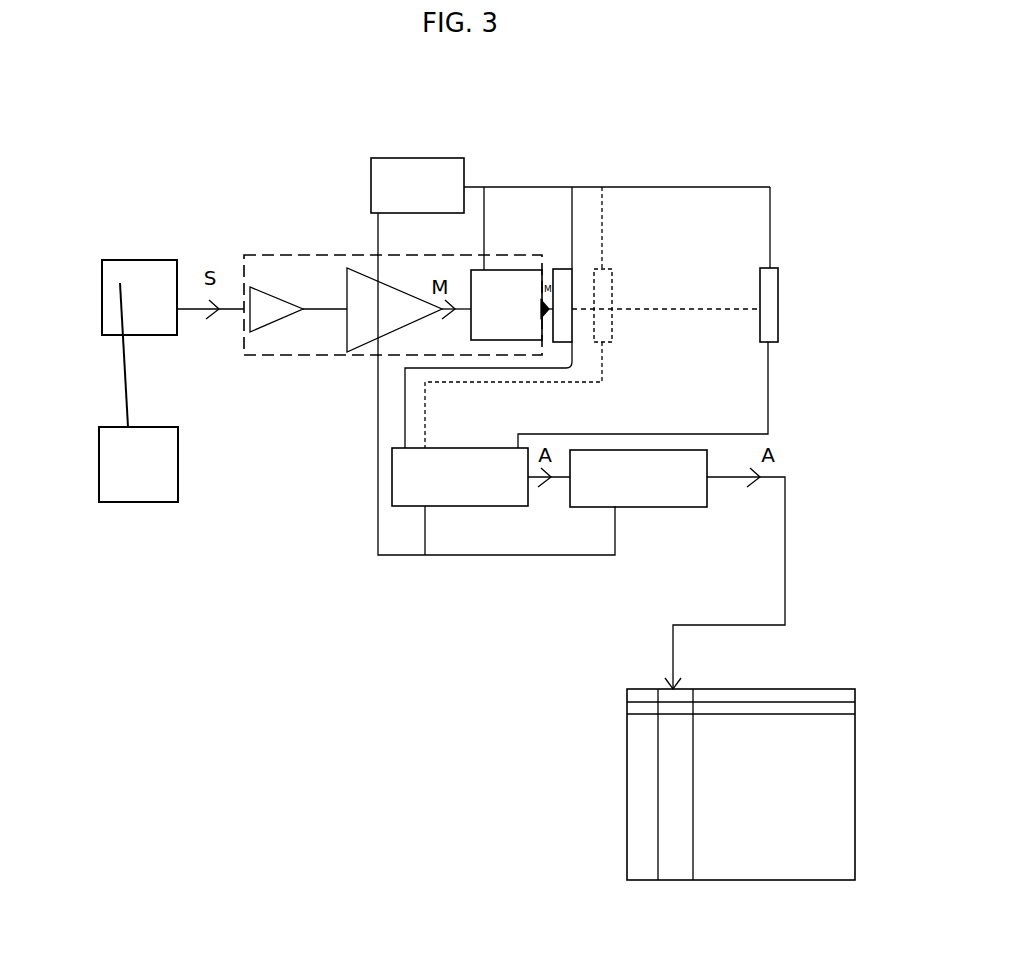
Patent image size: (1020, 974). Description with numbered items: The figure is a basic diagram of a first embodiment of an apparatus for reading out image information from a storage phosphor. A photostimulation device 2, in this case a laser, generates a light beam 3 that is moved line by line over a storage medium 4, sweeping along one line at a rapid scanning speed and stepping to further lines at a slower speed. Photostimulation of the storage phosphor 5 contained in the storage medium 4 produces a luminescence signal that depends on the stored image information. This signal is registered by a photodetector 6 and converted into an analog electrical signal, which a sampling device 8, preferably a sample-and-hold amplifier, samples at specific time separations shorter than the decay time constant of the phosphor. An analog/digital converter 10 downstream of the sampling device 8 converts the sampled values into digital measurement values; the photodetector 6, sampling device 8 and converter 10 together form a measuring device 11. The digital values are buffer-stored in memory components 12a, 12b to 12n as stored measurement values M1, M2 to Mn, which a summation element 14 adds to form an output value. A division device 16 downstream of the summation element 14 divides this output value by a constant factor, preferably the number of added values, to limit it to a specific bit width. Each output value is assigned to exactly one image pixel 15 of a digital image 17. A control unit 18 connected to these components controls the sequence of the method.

The photostimulation device 2 is at (148, 502).
The light beam 3 is at (122, 385).
The storage medium 4 is at (158, 272).
The storage phosphor 5 is at (168, 335).
The photodetector 6 is at (264, 294).
The sampling device 8 is at (360, 274).
The analog/digital converter 10 is at (519, 272).
The measuring device 11 is at (281, 354).
The memory component 12a is at (561, 284).
The memory component 12b is at (600, 284).
The memory component 12n is at (770, 285).
The summation element 14 is at (476, 494).
The image pixel 15 is at (627, 692).
The division device 16 is at (606, 494).
The digital image 17 is at (746, 868).
The control unit 18 is at (410, 167).
The digital measurement value M1 is at (565, 338).
The digital measurement value M2 is at (605, 343).
The digital measurement value Mn is at (776, 342).